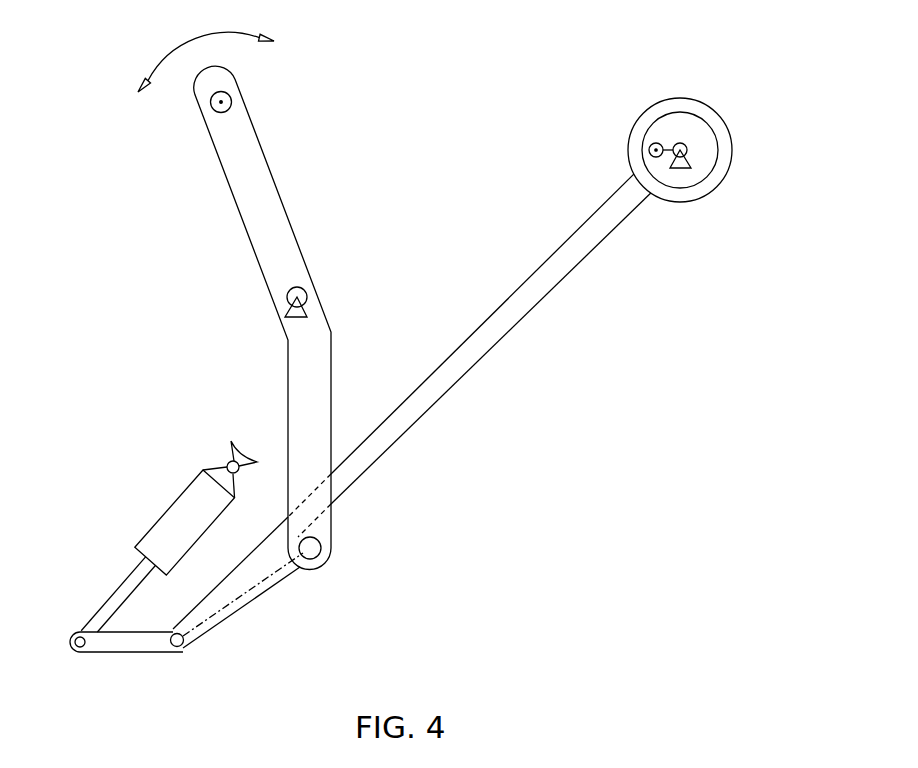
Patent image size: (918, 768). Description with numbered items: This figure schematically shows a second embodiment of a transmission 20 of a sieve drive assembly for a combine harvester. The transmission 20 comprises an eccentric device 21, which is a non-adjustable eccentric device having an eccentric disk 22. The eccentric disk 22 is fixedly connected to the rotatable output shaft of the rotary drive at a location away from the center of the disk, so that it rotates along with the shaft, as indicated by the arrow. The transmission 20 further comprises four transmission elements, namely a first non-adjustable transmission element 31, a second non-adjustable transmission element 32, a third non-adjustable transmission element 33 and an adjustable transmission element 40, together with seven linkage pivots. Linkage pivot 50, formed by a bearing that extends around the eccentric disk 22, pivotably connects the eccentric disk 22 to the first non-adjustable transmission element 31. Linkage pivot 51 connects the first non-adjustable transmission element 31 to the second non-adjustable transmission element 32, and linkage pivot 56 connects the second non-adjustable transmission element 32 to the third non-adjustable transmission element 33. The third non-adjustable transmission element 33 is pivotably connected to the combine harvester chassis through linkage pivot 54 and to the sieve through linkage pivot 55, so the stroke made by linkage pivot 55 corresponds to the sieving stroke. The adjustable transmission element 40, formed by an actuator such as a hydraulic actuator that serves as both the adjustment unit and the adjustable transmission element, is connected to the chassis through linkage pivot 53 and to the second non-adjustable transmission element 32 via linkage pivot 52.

The transmission 20 is at (478, 449).
The eccentric device 21 is at (695, 154).
The eccentric disk 22 is at (685, 170).
The first non-adjustable transmission element 31 is at (472, 360).
The second non-adjustable transmission element 32 is at (252, 597).
The third non-adjustable transmission element 33 is at (328, 367).
The adjustable transmission element 40 is at (160, 518).
The linkage pivot 50 is at (634, 125).
The linkage pivot 51 is at (177, 652).
The linkage pivot 52 is at (79, 652).
The linkage pivot 53 is at (230, 461).
The linkage pivot 54 is at (306, 291).
The linkage pivot 55 is at (232, 101).
The linkage pivot 56 is at (321, 547).